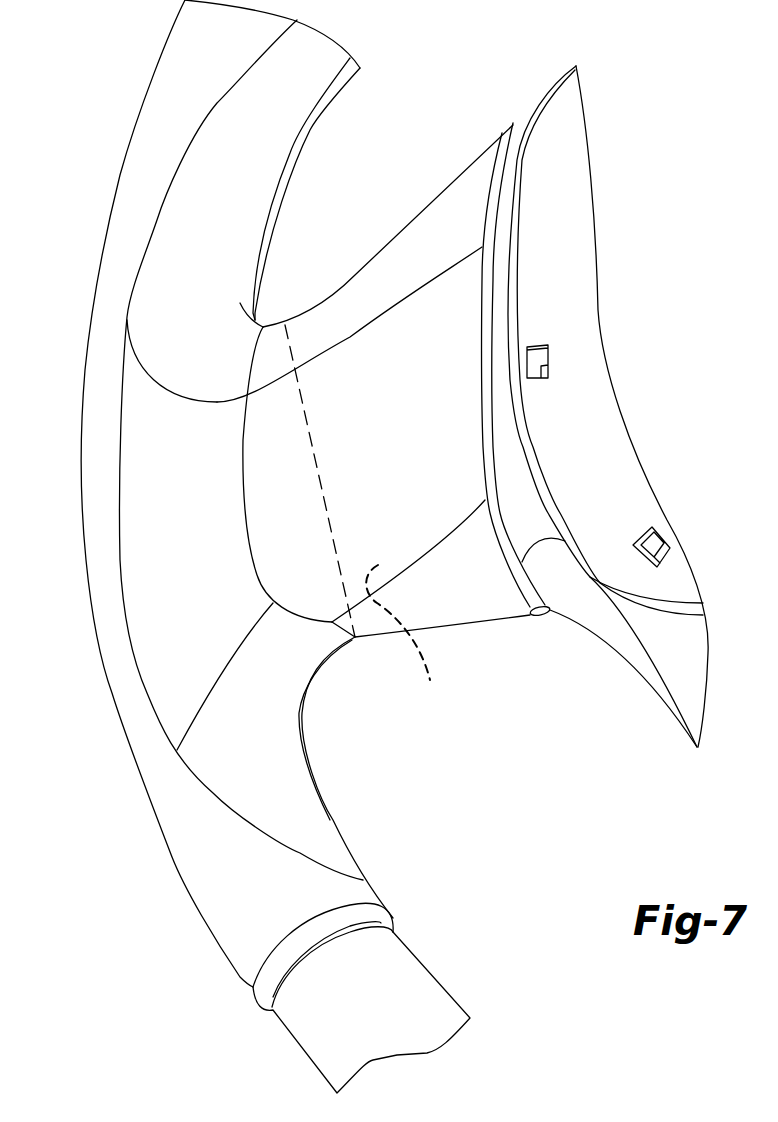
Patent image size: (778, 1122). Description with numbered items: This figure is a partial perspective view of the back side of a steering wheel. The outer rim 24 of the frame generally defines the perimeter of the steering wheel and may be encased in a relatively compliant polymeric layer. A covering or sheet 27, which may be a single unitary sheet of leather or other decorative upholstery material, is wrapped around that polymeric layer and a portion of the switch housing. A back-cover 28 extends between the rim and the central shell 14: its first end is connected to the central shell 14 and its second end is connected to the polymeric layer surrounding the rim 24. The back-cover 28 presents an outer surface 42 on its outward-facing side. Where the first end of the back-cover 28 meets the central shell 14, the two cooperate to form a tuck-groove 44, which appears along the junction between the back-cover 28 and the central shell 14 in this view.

The central shell 14 is at (525, 115).
The outer rim 24 is at (250, 898).
The sheet 27 is at (198, 477).
The back-cover 28 is at (403, 226).
The outer surface 42 is at (405, 638).
The tuck-groove 44 is at (485, 465).